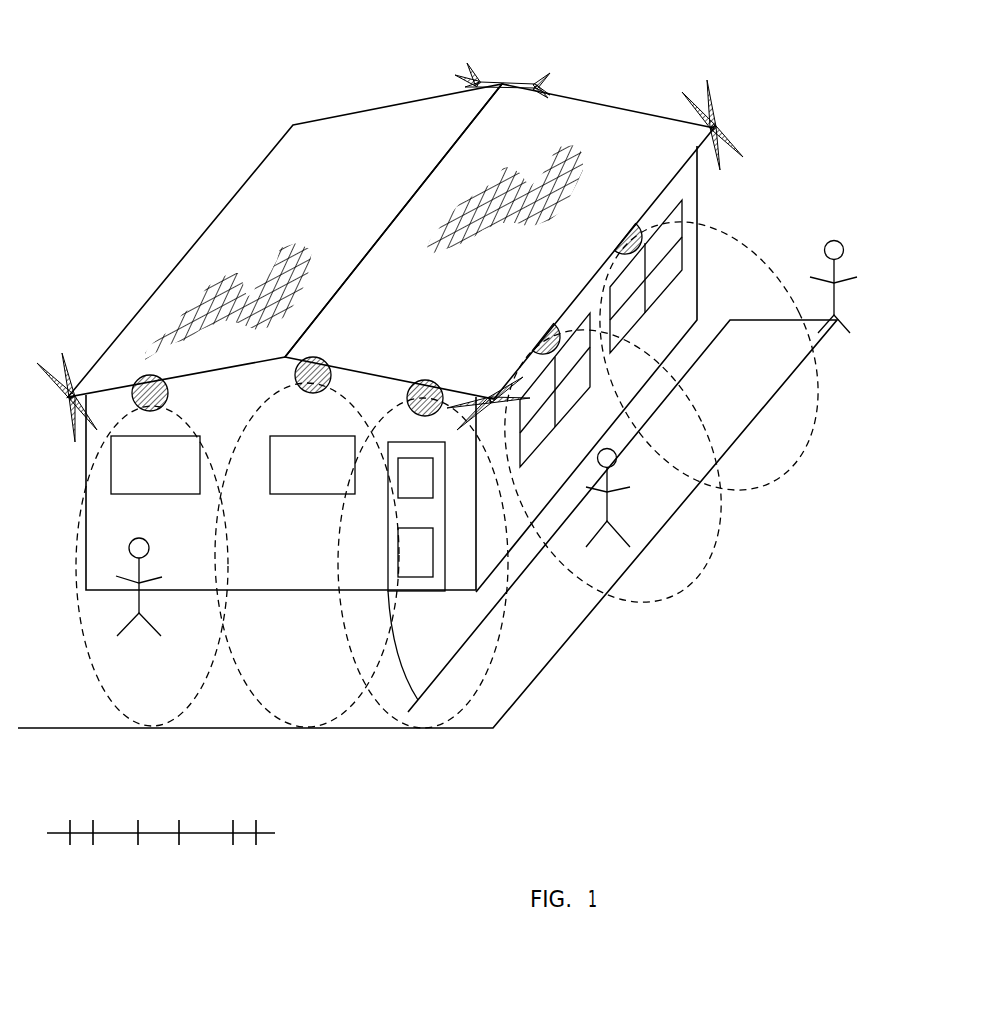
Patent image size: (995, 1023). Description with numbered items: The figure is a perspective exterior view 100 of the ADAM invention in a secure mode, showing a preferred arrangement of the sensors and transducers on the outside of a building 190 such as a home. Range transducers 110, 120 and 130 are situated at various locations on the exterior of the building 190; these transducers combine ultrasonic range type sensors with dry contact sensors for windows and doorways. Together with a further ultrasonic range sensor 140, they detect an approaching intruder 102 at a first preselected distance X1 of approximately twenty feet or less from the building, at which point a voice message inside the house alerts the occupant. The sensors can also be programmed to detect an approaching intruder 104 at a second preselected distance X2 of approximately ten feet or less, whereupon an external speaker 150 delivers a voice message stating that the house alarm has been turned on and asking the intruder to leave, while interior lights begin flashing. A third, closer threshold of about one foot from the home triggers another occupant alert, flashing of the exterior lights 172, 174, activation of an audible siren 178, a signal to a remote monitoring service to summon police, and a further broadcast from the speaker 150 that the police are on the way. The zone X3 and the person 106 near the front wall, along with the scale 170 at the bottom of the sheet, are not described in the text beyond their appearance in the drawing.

The perspective exterior view of the ADAM system 100 is at (427, 393).
The approaching intruder 102 is at (848, 242).
The approaching intruder 104 is at (613, 512).
The person in zone X3 106 is at (130, 633).
The range transducer 110 is at (117, 336).
The range transducer 120 is at (547, 345).
The range transducer 130 is at (634, 228).
The ultrasonic range sensor 140 is at (425, 418).
The external speaker 150 is at (492, 413).
The scale / distance indicator 170 is at (158, 830).
The exterior light 172 is at (60, 428).
The exterior light 174 is at (713, 117).
The audible siren 178 is at (508, 72).
The building 190 is at (386, 108).
The first preselected distance X1 is at (747, 237).
The second preselected distance X2 is at (686, 600).
The detection zone X3 is at (85, 655).